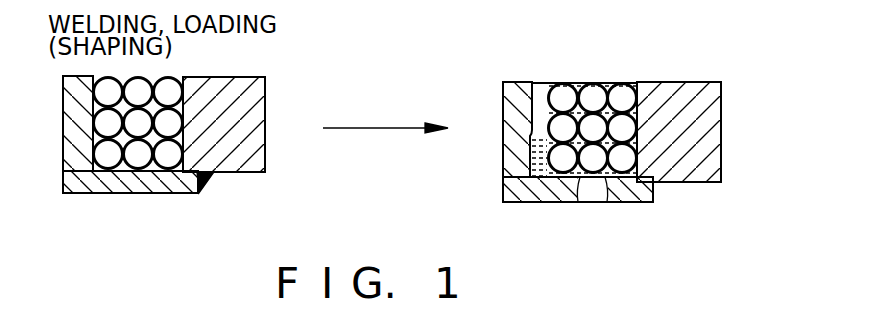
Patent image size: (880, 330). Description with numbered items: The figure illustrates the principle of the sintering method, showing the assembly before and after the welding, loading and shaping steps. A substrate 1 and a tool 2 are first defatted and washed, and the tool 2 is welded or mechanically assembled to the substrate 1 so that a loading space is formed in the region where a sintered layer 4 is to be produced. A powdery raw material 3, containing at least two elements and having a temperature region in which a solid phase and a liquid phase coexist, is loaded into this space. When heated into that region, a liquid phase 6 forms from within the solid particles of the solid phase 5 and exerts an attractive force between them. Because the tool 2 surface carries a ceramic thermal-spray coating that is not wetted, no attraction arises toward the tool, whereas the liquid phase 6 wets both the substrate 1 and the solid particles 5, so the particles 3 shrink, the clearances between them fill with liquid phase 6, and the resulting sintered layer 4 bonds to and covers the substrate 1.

The substrate 1 is at (259, 93).
The tool 2 is at (63, 125).
The powdery raw material 3 is at (164, 199).
The sintered layer 4 is at (591, 95).
The solid phase 5 is at (581, 180).
The liquid phase 6 is at (606, 183).